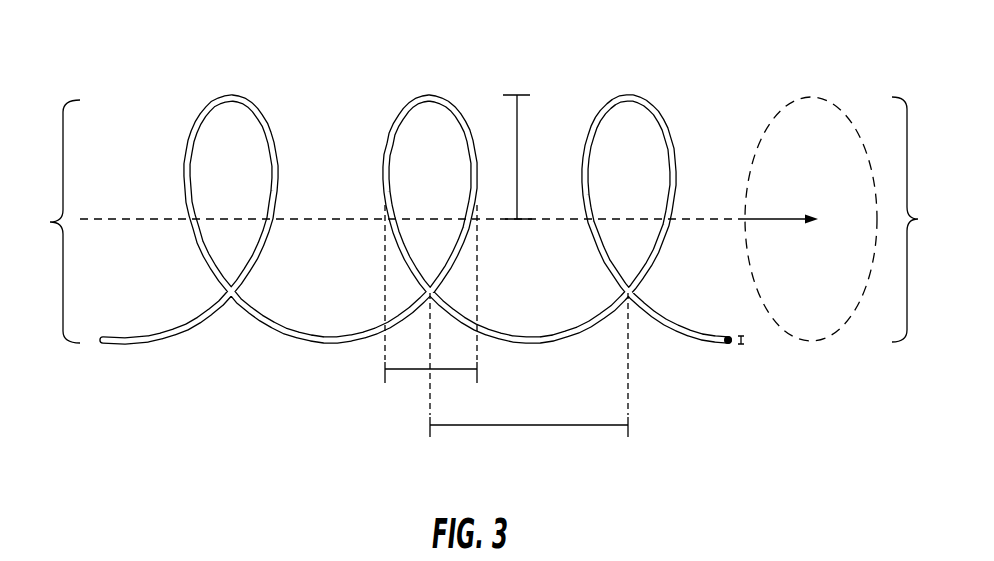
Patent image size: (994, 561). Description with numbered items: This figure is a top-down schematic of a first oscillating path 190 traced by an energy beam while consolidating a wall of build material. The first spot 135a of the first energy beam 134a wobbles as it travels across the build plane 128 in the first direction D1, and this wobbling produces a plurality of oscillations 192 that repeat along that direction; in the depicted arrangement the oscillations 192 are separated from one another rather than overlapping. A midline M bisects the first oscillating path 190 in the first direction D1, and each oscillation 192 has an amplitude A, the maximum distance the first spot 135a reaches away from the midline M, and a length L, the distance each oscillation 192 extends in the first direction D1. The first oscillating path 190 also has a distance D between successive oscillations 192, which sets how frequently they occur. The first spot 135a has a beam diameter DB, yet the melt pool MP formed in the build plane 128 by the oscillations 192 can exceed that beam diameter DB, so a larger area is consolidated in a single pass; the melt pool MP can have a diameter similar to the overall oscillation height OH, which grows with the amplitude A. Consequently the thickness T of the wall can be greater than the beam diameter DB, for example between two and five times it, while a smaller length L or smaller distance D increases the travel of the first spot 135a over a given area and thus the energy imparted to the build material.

The first oscillating path 190 is at (150, 111).
The oscillations 192 is at (382, 123).
The first energy beam 134a is at (640, 97).
The first spot 135a is at (726, 343).
The build plane 128 is at (143, 286).
The overall oscillation height OH is at (49, 221).
The melt pool MP is at (810, 97).
The thickness T is at (915, 219).
The first direction D1 is at (794, 219).
The midline M is at (690, 218).
The amplitude A is at (517, 132).
The length L is at (410, 369).
The distance D is at (530, 425).
The beam diameter DB is at (742, 342).